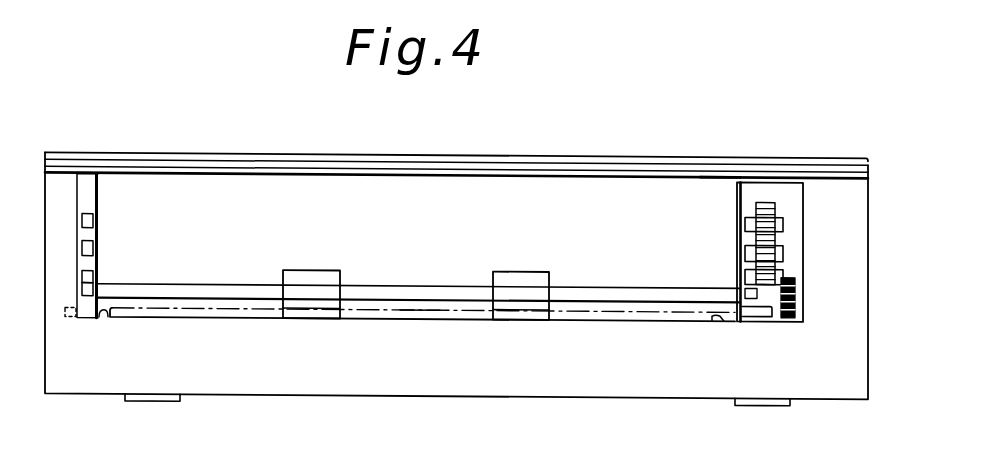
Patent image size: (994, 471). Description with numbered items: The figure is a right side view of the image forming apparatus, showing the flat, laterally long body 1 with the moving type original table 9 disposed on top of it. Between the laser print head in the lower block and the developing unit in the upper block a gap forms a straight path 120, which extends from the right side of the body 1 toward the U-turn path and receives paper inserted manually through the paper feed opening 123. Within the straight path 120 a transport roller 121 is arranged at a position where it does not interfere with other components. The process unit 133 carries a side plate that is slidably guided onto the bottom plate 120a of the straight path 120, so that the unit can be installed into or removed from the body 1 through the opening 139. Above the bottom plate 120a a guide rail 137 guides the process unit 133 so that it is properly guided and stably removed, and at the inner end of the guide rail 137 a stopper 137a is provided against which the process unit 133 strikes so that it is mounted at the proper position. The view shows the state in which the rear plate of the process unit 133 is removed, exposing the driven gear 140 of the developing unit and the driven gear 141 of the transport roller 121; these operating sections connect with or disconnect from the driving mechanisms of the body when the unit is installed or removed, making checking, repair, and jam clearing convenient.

The body 1 is at (871, 250).
The original table 9 is at (672, 153).
The process unit 133 is at (746, 190).
The opening 139 is at (718, 177).
The driven gear 140 is at (778, 243).
The driven gear 141 is at (795, 280).
The straight path 120 is at (257, 308).
The bottom plate 120a is at (363, 313).
The transport roller 121 is at (320, 283).
The paper feed opening 123 is at (416, 306).
The guide rail 137 is at (84, 320).
The stopper 137a is at (110, 320).